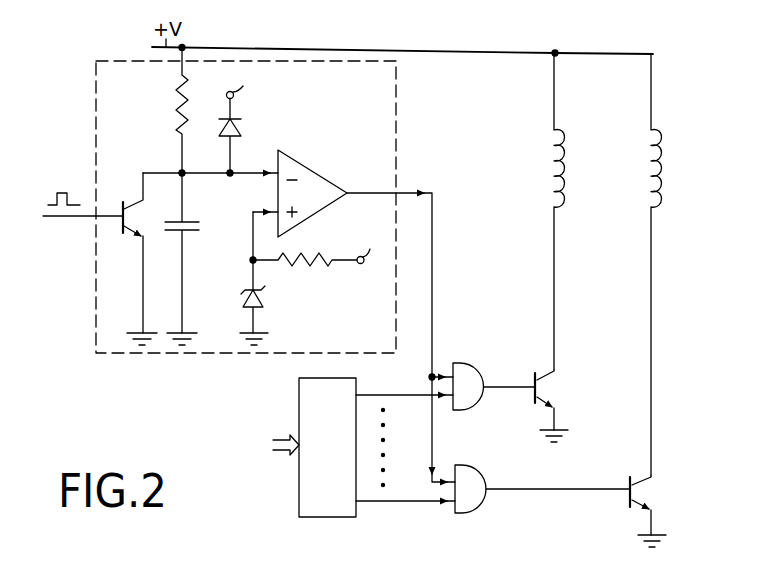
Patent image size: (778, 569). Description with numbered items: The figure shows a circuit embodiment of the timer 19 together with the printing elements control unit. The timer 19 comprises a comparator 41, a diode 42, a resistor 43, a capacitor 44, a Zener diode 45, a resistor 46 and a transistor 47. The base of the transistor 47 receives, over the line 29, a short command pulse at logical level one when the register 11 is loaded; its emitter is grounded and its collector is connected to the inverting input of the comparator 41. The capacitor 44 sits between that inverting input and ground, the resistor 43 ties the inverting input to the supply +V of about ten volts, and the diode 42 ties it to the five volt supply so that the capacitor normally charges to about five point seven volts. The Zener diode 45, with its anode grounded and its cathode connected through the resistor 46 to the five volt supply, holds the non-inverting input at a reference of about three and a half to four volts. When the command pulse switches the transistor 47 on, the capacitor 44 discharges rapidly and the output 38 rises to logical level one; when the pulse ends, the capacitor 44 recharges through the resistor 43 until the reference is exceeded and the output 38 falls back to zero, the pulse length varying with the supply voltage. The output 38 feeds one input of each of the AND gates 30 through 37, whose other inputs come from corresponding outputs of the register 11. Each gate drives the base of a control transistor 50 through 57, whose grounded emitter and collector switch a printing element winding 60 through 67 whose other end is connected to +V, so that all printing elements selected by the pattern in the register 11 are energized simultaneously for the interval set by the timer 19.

The register 11 is at (295, 484).
The timer 19 is at (396, 103).
The line 29 is at (67, 223).
The AND gate 30 is at (488, 360).
The AND gate 37 is at (488, 465).
The comparator output 38 is at (398, 188).
The comparator 41 is at (317, 169).
The diode 42 is at (245, 122).
The resistor 43 is at (176, 114).
The capacitor 44 is at (184, 232).
The Zener diode 45 is at (262, 305).
The resistor 46 is at (319, 263).
The transistor 47 is at (121, 238).
The control transistor 50 is at (548, 386).
The control transistor 57 is at (628, 488).
The printing element winding 60 is at (548, 173).
The printing element winding 67 is at (645, 173).